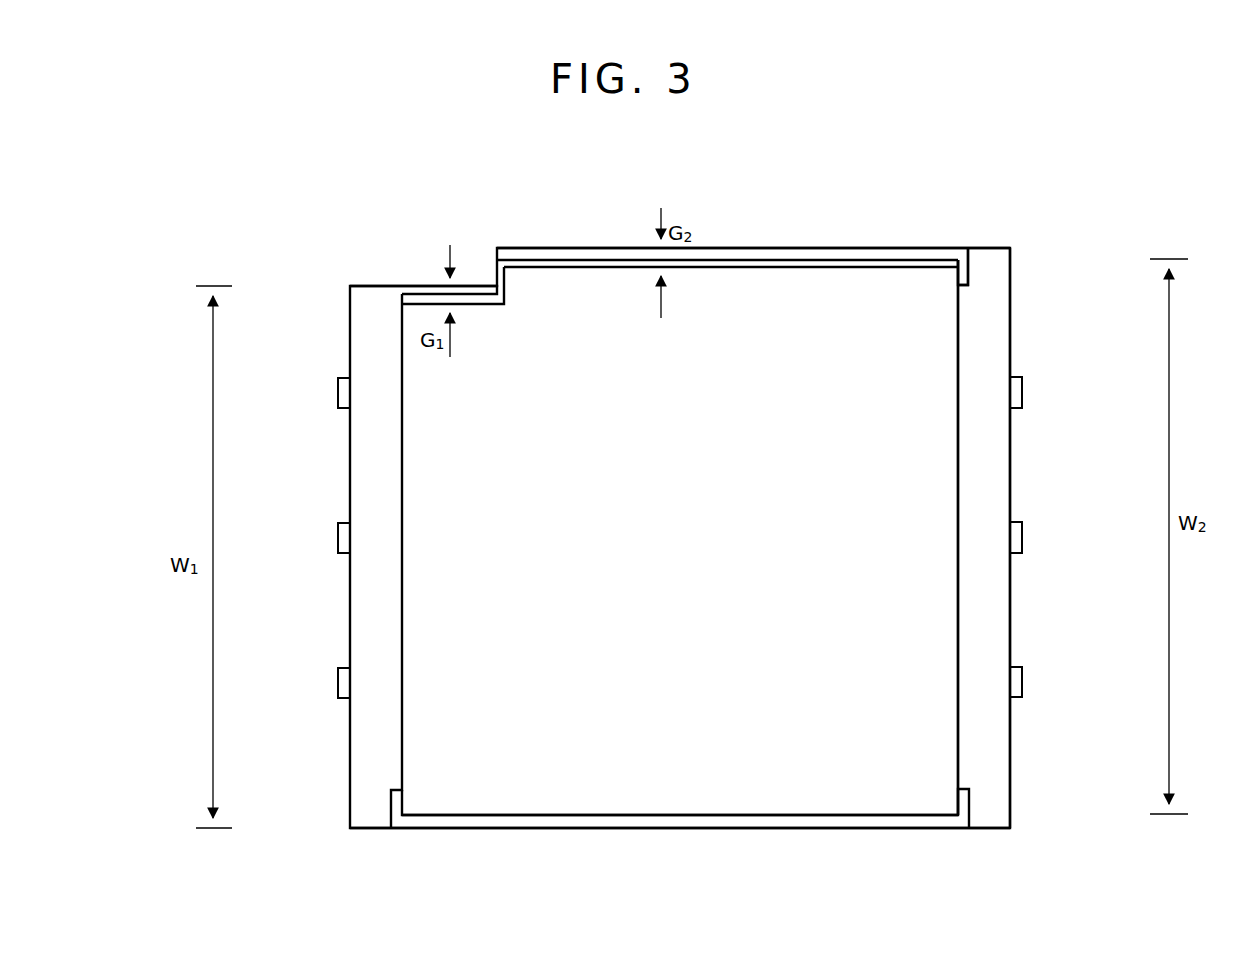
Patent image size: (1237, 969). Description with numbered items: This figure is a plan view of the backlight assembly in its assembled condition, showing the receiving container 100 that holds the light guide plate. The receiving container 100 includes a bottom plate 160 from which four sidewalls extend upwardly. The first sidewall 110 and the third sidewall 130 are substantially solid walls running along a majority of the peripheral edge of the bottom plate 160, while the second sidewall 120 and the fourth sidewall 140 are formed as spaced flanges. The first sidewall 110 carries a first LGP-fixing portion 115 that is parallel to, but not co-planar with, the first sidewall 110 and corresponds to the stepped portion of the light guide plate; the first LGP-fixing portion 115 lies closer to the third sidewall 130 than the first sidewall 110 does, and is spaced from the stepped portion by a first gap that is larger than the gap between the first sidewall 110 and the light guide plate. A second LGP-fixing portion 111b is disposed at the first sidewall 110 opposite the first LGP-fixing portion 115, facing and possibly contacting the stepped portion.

The receiving container 100 is at (1022, 268).
The first sidewall 110 is at (843, 252).
The second LGP-fixing portion 111b is at (979, 265).
The first LGP-fixing portion 115 is at (418, 289).
The second sidewall 120 is at (1013, 683).
The third sidewall 130 is at (779, 820).
The fourth sidewall 140 is at (342, 537).
The bottom plate 160 is at (998, 460).